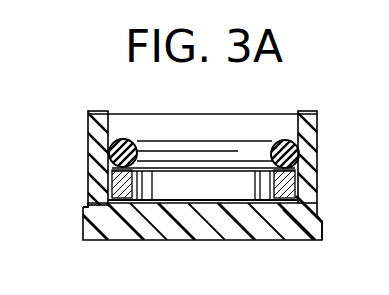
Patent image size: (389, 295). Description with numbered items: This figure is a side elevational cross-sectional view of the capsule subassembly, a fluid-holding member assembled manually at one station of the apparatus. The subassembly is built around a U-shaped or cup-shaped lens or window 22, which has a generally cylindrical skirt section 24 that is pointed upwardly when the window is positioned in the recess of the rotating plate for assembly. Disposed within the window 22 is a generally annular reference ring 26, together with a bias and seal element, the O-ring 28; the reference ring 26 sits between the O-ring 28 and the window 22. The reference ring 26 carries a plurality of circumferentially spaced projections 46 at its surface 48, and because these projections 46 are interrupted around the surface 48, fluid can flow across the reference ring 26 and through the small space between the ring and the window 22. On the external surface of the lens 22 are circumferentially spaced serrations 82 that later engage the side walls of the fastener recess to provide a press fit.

The skirt section 24 is at (310, 170).
The window 22 is at (160, 226).
The O-ring 28 is at (112, 160).
The reference ring 26 is at (114, 193).
The projections 46 is at (287, 202).
The surface 48 is at (88, 237).
The serrations 82 is at (320, 237).